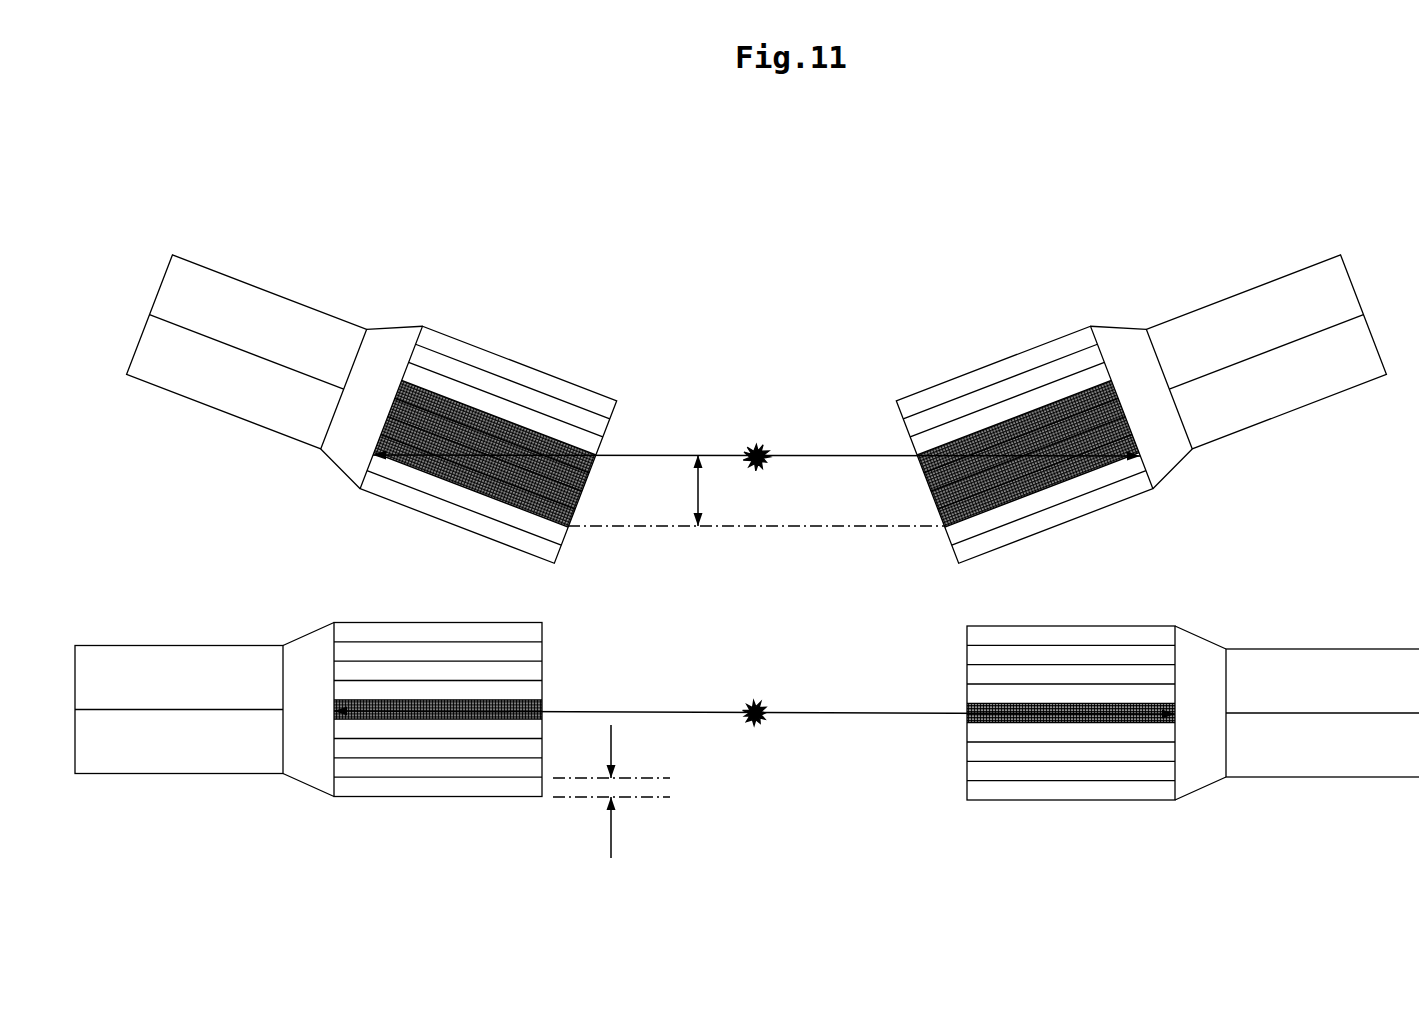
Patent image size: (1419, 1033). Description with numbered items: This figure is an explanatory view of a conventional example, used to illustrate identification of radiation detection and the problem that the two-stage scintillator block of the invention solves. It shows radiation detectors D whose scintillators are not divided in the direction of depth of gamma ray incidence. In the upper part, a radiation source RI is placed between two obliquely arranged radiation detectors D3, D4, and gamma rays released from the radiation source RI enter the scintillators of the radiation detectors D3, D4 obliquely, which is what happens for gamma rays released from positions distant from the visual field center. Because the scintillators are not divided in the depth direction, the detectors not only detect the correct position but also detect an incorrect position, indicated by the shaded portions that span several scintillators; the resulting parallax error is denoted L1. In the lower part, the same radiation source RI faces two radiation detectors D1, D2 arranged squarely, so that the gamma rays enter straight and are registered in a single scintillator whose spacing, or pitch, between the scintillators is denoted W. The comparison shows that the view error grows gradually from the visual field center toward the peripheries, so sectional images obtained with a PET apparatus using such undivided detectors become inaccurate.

The radiation detectors D is at (800, 155).
The radiation detector D1 is at (262, 776).
The radiation detector D2 is at (1228, 779).
The radiation detector D3 is at (207, 408).
The radiation detector D4 is at (1287, 414).
The radiation source RI is at (757, 476).
The parallax error L1 is at (695, 484).
The spaces (pitch) between the scintillators W is at (613, 848).
The gamma rays gamma is at (754, 555).